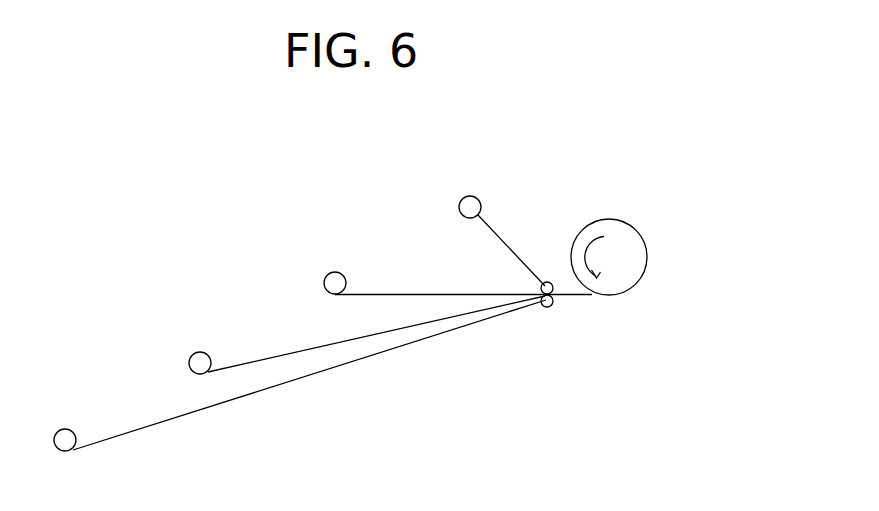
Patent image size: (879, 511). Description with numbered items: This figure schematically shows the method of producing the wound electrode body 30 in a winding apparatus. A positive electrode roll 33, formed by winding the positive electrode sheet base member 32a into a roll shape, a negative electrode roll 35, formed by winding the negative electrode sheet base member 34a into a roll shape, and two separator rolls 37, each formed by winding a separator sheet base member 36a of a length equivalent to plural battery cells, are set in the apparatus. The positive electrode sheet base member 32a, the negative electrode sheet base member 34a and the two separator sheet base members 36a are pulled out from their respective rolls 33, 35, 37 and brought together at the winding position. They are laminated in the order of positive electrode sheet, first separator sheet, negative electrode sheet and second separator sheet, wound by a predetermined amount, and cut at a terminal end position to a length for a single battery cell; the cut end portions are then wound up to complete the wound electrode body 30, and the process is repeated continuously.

The wound electrode body 30 is at (646, 255).
The positive electrode roll 33 is at (480, 198).
The positive electrode sheet base member 32a is at (505, 253).
The separator sheet base member 36a is at (417, 293).
The separator roll 37 is at (347, 277).
The negative electrode roll 35 is at (207, 353).
The negative electrode sheet base member 34a is at (283, 355).